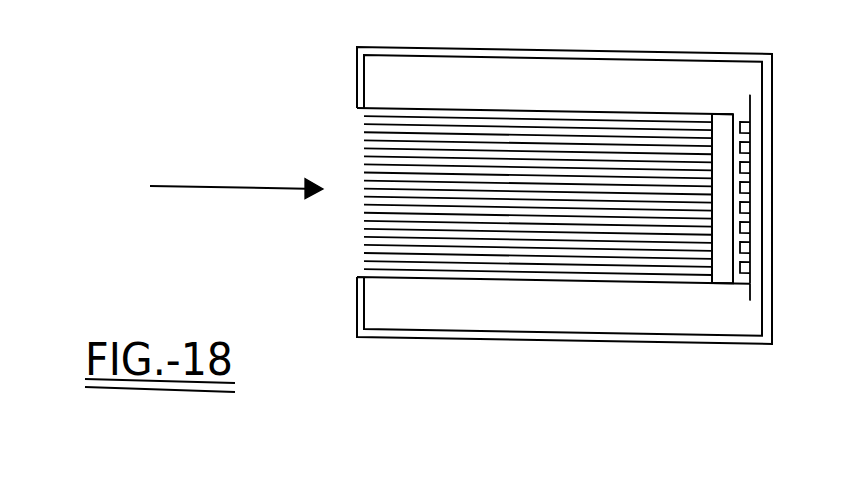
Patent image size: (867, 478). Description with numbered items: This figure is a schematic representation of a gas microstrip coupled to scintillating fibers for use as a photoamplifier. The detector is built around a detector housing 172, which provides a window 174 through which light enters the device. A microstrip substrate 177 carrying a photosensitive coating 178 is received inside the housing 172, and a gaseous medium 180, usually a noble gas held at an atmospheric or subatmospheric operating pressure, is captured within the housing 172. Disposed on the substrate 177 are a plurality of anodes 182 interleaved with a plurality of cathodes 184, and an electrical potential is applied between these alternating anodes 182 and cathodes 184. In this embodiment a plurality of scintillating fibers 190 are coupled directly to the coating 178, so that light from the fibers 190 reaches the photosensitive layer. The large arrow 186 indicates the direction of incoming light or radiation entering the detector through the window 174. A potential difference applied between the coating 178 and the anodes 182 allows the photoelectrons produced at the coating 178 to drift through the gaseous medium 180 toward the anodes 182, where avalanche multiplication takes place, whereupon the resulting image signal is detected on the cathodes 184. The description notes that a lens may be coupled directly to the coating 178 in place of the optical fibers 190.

The detector housing 172 is at (538, 340).
The window 174 is at (355, 128).
The microstrip substrate 177 is at (750, 298).
The photosensitive coating 178 is at (720, 102).
The gaseous medium 180 is at (573, 72).
The anodes 182 is at (743, 146).
The cathodes 184 is at (745, 168).
The flow direction arrow 186 is at (193, 187).
The scintillating fibers 190 is at (450, 100).